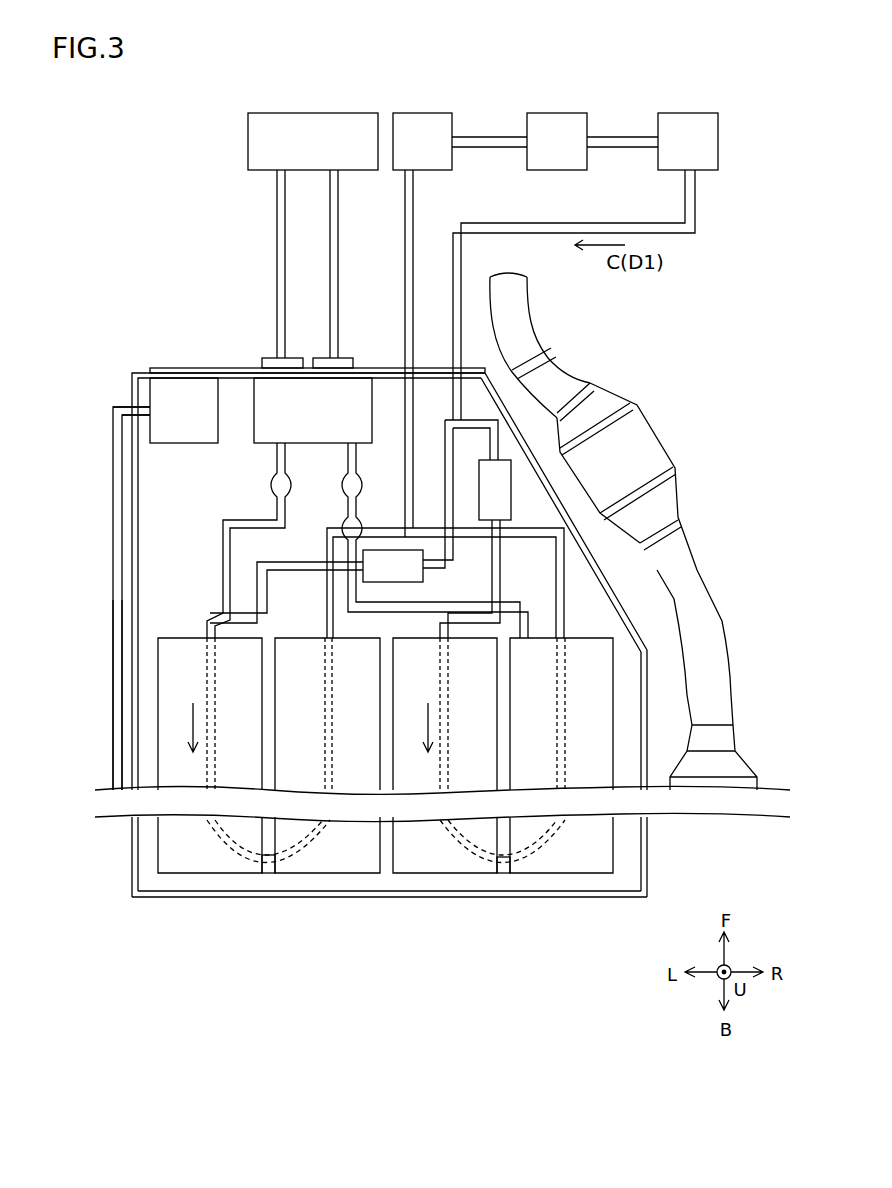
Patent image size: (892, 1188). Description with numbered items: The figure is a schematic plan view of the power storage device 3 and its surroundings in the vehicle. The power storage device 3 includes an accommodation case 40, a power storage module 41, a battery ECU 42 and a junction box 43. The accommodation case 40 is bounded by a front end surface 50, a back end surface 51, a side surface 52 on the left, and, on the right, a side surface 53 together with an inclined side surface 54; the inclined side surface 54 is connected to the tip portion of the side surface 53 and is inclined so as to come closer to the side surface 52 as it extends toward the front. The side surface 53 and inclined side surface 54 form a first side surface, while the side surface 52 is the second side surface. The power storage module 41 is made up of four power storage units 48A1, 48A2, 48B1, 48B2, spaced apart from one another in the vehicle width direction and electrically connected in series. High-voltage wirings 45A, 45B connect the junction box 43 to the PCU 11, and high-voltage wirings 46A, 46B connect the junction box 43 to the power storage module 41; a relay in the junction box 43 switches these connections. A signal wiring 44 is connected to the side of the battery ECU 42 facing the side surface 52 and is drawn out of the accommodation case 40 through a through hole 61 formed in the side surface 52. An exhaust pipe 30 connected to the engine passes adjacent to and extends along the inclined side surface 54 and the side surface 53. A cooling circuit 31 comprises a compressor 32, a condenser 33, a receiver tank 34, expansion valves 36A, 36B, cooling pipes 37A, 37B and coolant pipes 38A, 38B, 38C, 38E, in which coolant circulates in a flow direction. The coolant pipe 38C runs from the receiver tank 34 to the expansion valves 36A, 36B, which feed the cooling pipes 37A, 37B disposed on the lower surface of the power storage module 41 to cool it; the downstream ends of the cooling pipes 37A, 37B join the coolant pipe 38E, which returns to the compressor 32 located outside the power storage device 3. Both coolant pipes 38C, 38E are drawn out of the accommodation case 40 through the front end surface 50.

The power storage device 3 is at (135, 320).
The PCU 11 is at (312, 112).
The exhaust pipe 30 is at (715, 618).
The cooling circuit 31 is at (746, 124).
The compressor 32 is at (420, 112).
The condenser 33 is at (560, 112).
The receiver tank 34 is at (690, 112).
The expansion valve 36A is at (511, 488).
The expansion valve 36B is at (421, 578).
The cooling pipe 37A is at (503, 875).
The cooling pipe 37B is at (268, 875).
The coolant pipe 38A is at (492, 137).
The coolant pipe 38B is at (625, 137).
The coolant pipe 38C is at (682, 178).
The coolant pipe 38E is at (405, 247).
The accommodation case 40 is at (625, 930).
The power storage module 41 is at (452, 656).
The battery ECU 42 is at (189, 446).
The junction box 43 is at (324, 446).
The signal wiring 44 is at (113, 557).
The high-voltage wiring 45A is at (277, 247).
The high-voltage wiring 45B is at (338, 212).
The high-voltage wiring 46A is at (223, 547).
The high-voltage wiring 46B is at (348, 509).
The power storage unit 48A1 is at (425, 875).
The power storage unit 48A2 is at (577, 875).
The power storage unit 48B1 is at (178, 875).
The power storage unit 48B2 is at (335, 875).
The front end surface 50 is at (250, 367).
The back end surface 51 is at (377, 897).
The side surface 52 is at (118, 695).
The side surface 53 is at (647, 847).
The inclined side surface 54 is at (495, 392).
The through hole 61 is at (132, 410).